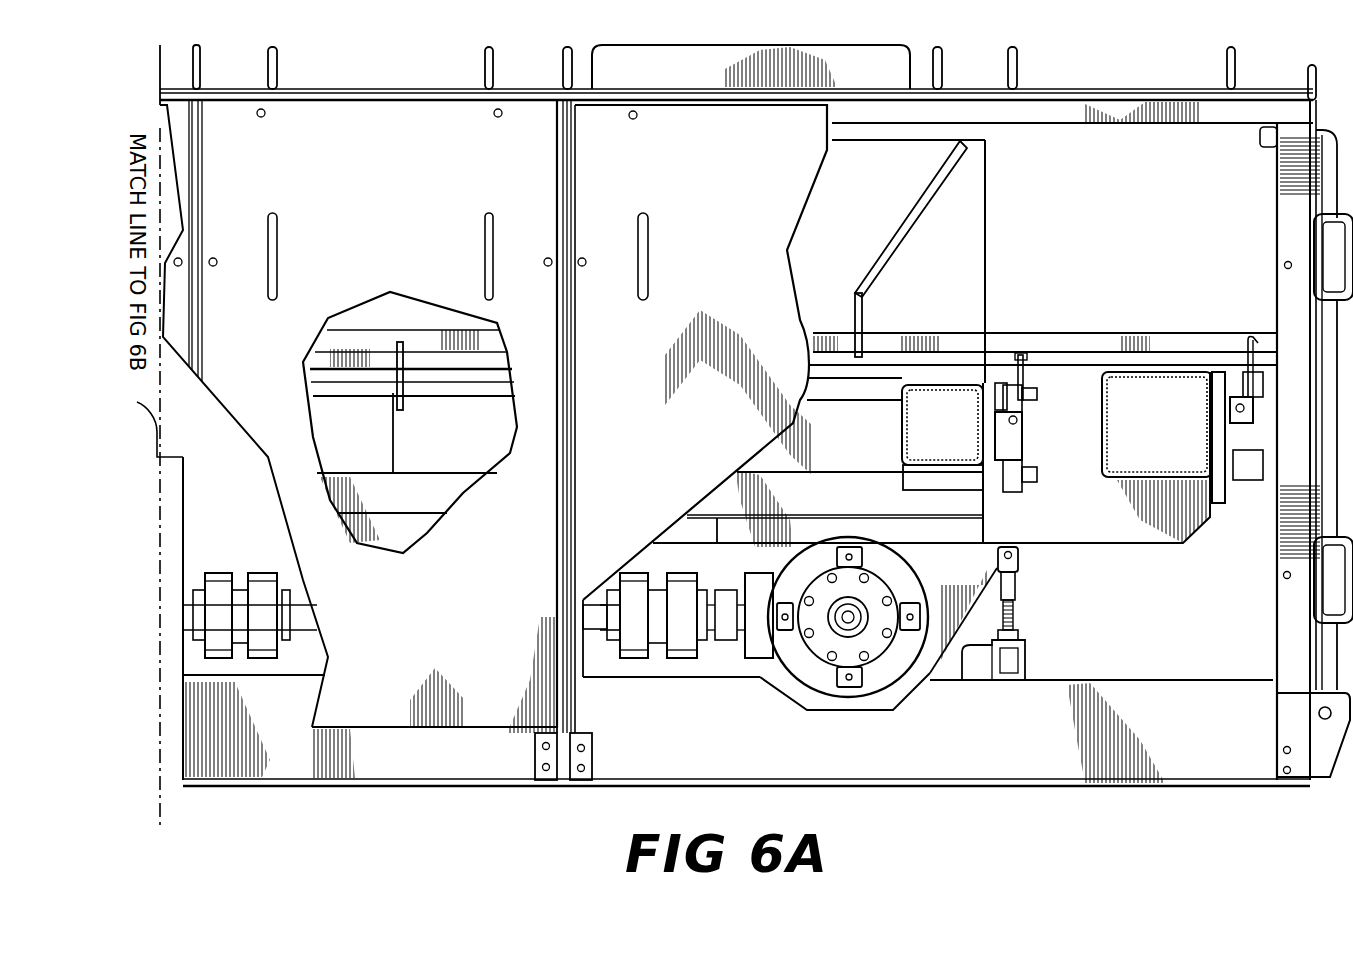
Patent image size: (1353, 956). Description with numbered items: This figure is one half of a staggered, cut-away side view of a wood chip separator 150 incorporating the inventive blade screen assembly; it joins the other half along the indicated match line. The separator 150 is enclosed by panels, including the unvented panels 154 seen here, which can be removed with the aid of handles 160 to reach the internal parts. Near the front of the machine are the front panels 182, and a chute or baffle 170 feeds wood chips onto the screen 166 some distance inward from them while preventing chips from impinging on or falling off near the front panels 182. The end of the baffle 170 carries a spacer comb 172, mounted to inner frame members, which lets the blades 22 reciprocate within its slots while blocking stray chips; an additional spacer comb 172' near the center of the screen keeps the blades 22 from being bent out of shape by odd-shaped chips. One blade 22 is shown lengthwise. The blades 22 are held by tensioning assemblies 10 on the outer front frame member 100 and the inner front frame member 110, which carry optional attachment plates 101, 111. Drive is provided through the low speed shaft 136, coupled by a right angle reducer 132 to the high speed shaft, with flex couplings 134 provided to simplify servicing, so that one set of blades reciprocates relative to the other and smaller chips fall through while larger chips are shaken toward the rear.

The wood chip separator 150 is at (378, 46).
The unvented panel 154 is at (398, 165).
The spacer comb 172' is at (410, 399).
The handle 160 is at (648, 233).
The baffle 170 is at (912, 222).
The spacer comb 172 is at (899, 312).
The inner front frame member 110 is at (965, 385).
The attachment plate 111 is at (988, 398).
The blade 22 is at (1138, 340).
The screen 166 is at (1212, 337).
The tensioning assembly 10 is at (1270, 416).
The front panel 182 is at (1325, 312).
The outer front frame member 100 is at (1192, 500).
The attachment plate 101 is at (1222, 492).
The low speed shaft 136 is at (305, 615).
The flex coupling 134 is at (268, 617).
The right angle reducer 132 is at (897, 662).